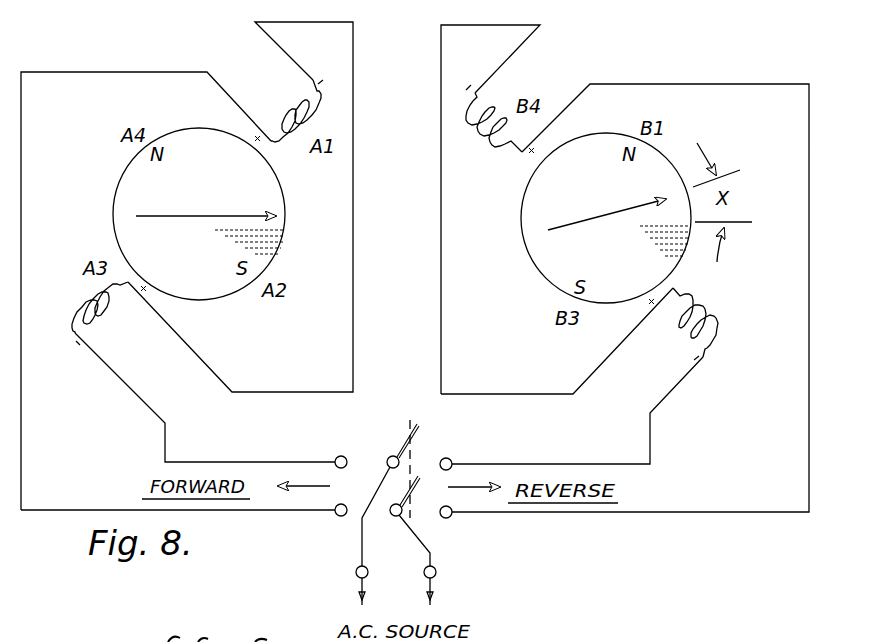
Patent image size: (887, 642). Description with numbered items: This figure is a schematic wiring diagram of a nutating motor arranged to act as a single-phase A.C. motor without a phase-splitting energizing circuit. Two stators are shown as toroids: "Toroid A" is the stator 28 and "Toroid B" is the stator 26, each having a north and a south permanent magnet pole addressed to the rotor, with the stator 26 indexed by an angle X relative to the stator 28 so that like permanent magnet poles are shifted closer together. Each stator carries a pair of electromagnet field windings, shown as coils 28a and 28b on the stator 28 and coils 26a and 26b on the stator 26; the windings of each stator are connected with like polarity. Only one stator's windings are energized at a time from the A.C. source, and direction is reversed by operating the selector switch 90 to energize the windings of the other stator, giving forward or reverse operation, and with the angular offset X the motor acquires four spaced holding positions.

The stator 28 is at (209, 271).
The coil of toroid A 28a is at (286, 148).
The coil of toroid A 28b is at (112, 320).
The stator 26 is at (620, 267).
The coil of toroid B 26a is at (487, 156).
The coil of toroid B 26b is at (693, 298).
The selector switch 90 is at (378, 456).